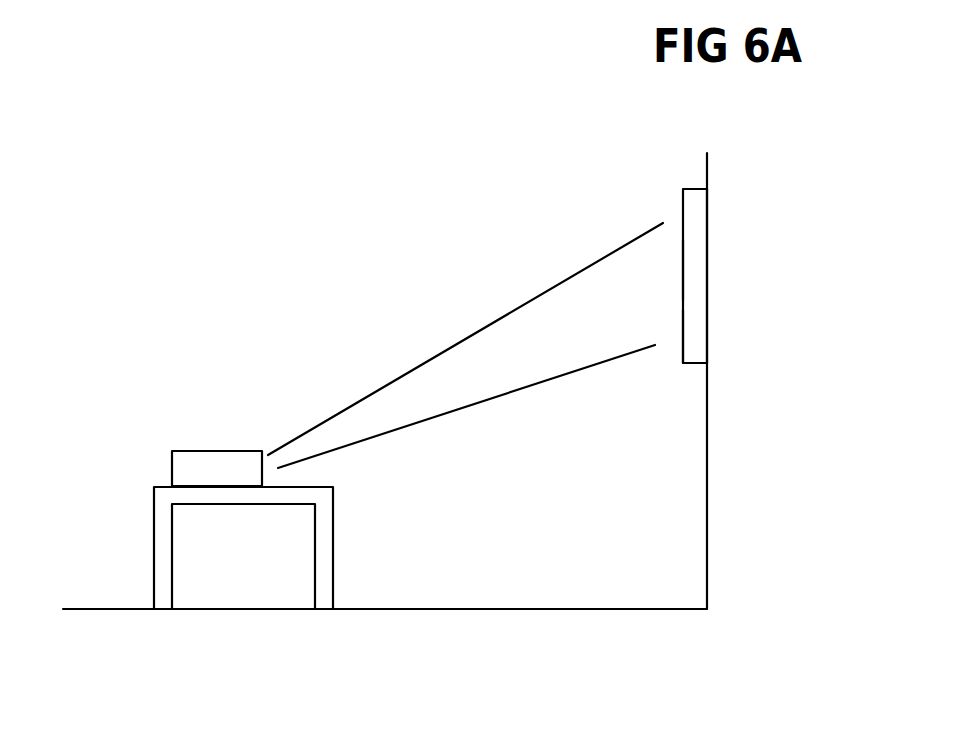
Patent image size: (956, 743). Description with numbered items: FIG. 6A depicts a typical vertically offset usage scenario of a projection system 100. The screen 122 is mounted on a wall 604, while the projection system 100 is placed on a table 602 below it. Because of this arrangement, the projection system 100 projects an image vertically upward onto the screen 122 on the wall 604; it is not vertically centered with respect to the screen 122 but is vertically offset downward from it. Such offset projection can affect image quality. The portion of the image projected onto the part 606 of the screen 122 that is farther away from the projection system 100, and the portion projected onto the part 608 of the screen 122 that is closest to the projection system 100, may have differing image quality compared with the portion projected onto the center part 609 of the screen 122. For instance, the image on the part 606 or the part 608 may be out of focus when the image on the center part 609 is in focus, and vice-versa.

The projection system 100 is at (224, 462).
The screen 122 is at (690, 227).
The table 602 is at (323, 560).
The wall 604 is at (707, 478).
The part of the screen farther away from the projection system 606 is at (697, 203).
The part of the screen closest to the projection system 608 is at (697, 332).
The center part of the screen 609 is at (697, 265).